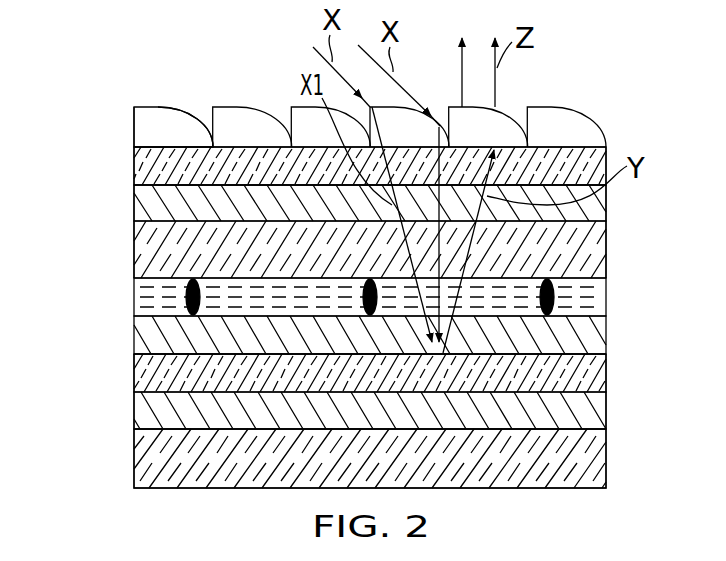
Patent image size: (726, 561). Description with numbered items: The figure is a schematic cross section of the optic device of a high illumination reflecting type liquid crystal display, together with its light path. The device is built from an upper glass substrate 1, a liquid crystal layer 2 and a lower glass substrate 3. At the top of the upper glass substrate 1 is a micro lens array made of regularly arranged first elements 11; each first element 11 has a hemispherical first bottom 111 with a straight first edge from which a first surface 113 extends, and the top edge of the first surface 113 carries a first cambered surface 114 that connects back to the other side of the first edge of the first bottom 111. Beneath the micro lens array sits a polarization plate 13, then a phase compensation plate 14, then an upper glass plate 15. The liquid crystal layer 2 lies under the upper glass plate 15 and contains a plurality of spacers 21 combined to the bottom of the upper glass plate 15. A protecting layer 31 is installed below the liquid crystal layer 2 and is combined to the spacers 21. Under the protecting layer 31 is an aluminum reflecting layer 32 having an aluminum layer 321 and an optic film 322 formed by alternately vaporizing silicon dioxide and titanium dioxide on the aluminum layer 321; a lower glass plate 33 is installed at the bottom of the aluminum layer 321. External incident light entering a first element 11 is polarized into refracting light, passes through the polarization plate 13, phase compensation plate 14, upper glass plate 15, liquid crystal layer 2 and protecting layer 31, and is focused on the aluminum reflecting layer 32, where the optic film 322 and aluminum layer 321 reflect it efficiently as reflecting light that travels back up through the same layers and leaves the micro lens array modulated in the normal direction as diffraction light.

The upper glass substrate 1 is at (622, 207).
The first element 11 is at (148, 102).
The first surface 113 is at (133, 129).
The first cambered surface 114 is at (175, 108).
The first bottom 111 is at (133, 167).
The polarization plate 13 is at (133, 185).
The phase compensation plate 14 is at (133, 206).
The upper glass plate 15 is at (133, 250).
The liquid crystal layer 2 is at (622, 296).
The spacers 21 is at (186, 293).
The protecting layer 31 is at (133, 335).
The lower glass substrate 3 is at (622, 402).
The aluminum reflecting layer 32 is at (60, 358).
The optic film 322 is at (133, 373).
The aluminum layer 321 is at (140, 413).
The lower glass plate 33 is at (133, 468).